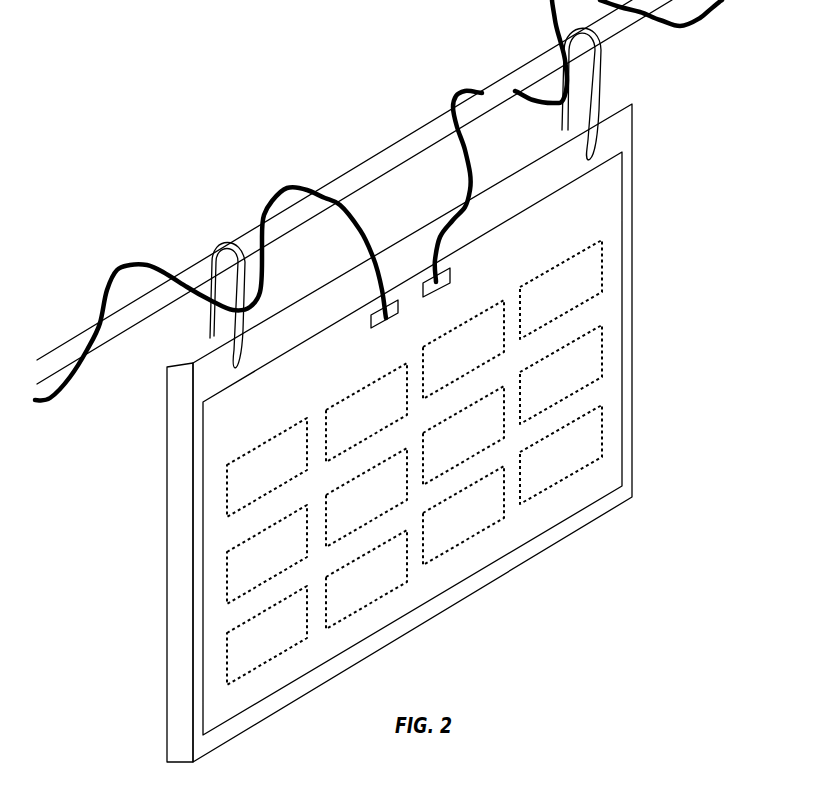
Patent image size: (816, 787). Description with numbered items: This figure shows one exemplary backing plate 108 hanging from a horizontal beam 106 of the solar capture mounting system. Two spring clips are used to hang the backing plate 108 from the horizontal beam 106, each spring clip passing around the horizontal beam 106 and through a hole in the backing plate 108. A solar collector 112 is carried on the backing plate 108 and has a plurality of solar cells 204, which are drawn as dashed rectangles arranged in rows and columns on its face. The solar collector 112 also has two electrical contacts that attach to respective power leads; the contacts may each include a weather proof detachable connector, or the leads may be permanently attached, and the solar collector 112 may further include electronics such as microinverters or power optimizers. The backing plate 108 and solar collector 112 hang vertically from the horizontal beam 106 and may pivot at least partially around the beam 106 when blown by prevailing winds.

The horizontal beam 106 is at (382, 152).
The backing plate 108 is at (167, 735).
The solar collector 112 is at (603, 213).
The solar cells 204 is at (603, 263).